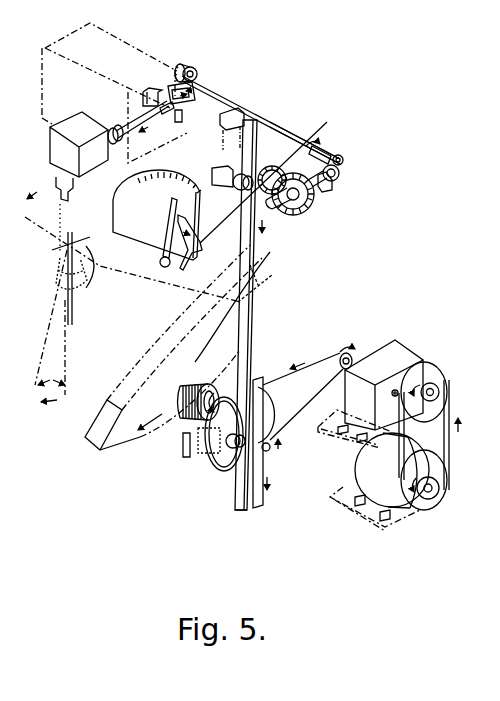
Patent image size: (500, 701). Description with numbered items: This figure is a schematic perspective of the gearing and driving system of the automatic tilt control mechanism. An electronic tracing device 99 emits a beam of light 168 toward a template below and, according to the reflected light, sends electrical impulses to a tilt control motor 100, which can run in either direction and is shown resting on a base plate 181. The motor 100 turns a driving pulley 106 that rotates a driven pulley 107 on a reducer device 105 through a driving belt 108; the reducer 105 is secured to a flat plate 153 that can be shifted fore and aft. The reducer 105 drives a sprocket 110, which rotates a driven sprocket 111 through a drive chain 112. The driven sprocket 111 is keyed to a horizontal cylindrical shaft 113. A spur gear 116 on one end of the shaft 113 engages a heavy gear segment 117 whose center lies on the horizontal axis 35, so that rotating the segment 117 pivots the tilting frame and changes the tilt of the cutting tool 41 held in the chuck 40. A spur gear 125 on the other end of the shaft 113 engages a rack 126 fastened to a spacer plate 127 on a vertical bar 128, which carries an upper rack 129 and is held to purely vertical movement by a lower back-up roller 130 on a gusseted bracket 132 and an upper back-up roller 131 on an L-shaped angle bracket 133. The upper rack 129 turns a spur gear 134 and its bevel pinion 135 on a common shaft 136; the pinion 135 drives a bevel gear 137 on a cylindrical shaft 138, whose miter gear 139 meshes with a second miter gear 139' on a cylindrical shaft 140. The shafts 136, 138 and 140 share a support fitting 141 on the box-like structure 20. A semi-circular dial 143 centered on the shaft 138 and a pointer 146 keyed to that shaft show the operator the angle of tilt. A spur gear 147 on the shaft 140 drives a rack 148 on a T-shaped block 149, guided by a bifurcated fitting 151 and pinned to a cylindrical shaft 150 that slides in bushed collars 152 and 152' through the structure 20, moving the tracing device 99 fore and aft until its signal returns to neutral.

The horizontal box-like structure 20 is at (113, 43).
The horizontal axis 35 is at (28, 219).
The chuck 40 is at (80, 283).
The cutting or milling tool 41 is at (78, 249).
The electronic tracing device 99 is at (88, 135).
The tilt control motor 100 is at (390, 480).
The reducer device 105 is at (398, 369).
The driving pulley 106 is at (420, 513).
The driven pulley 107 is at (440, 365).
The driving belt 108 is at (443, 427).
The sprocket 110 is at (341, 362).
The driven sprocket 111 is at (274, 408).
The drive chain 112 is at (284, 380).
The cylindrical shaft 113 is at (214, 398).
The spur gear 116 is at (200, 383).
The gear segment 117 is at (123, 396).
The spur gear 125 is at (270, 452).
The rack 126 is at (263, 494).
The spacer plate 127 is at (233, 493).
The link or bar 128 is at (255, 354).
The upper rack 129 is at (263, 258).
The lower back-up roller 130 is at (222, 477).
The upper back-up roller 131 is at (237, 190).
The gusseted bracket 132 is at (183, 455).
The L-shaped angle bracket 133 is at (212, 172).
The spur gear 134 is at (278, 170).
The bevel pinion 135 is at (278, 212).
The common shaft 136 is at (277, 178).
The bevel gear 137 is at (308, 212).
The cylindrical shaft 138 is at (196, 250).
The miter gear 139 is at (345, 179).
The second miter gear 139' is at (357, 155).
The cylindrical shaft 140 is at (277, 120).
The support fitting or bracket 141 is at (228, 131).
The semi-circular dial 143 is at (180, 176).
The pointer or indicator 146 is at (168, 246).
The spur gear 147 is at (186, 64).
The rack 148 is at (200, 79).
The T-shaped block 149 is at (195, 104).
The cylindrical shaft 150 is at (138, 104).
The bifurcated fitting 151 is at (178, 124).
The bushed collar 152 is at (128, 121).
The bushed collar 152' is at (161, 124).
The flat plate 153 is at (342, 441).
The beam of light 168 is at (65, 213).
The motor base plate 181 is at (370, 523).